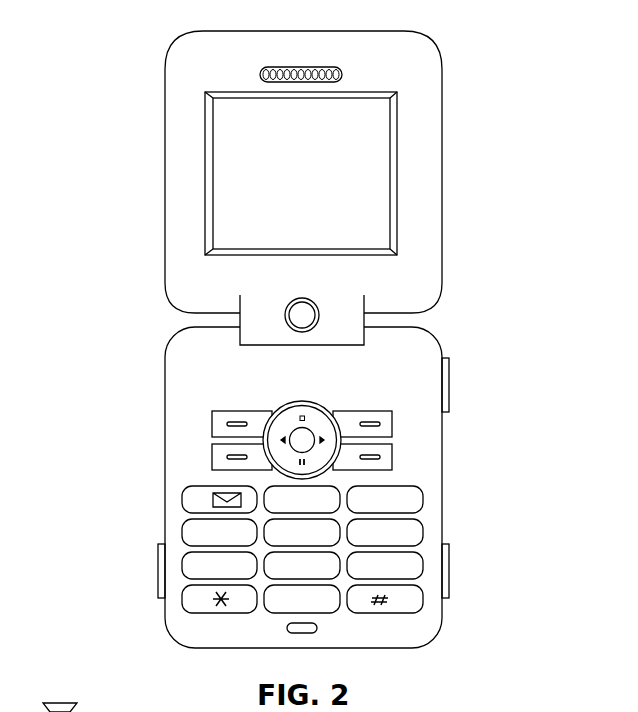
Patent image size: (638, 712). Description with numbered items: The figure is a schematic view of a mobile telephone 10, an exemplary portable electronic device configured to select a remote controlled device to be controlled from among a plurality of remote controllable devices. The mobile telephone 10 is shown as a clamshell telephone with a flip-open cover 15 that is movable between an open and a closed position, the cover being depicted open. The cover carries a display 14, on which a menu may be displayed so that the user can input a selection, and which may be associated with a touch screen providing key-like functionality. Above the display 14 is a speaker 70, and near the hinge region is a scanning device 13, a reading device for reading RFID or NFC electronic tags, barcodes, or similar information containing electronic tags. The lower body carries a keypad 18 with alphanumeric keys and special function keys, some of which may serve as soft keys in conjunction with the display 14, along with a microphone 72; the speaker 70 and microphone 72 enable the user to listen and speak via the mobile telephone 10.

The mobile telephone 10 is at (286, 357).
The scanning device 13 is at (302, 315).
The display 14 is at (222, 185).
The flip-open cover 15 is at (165, 213).
The keypad 18 is at (236, 621).
The speaker 70 is at (346, 74).
The microphone 72 is at (305, 637).